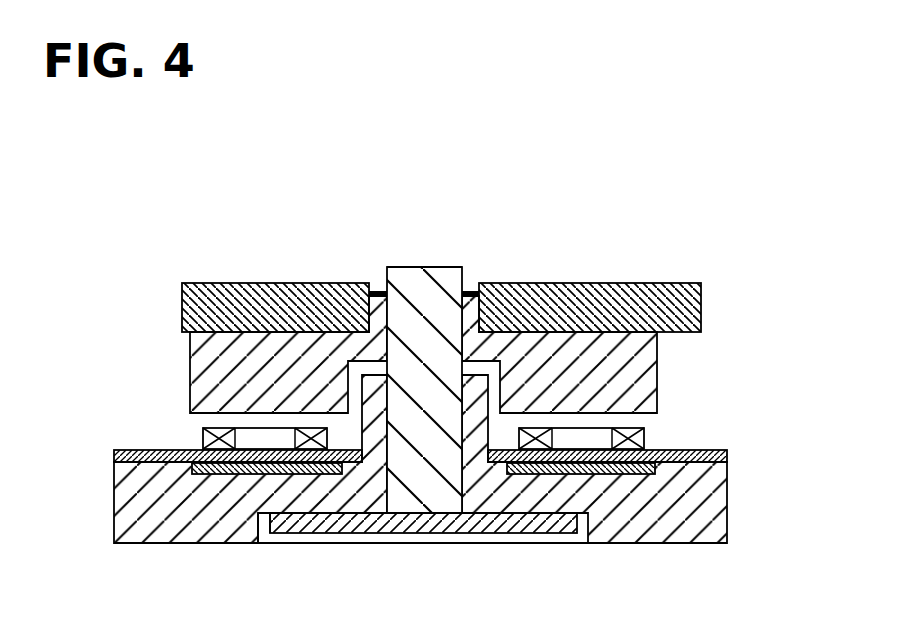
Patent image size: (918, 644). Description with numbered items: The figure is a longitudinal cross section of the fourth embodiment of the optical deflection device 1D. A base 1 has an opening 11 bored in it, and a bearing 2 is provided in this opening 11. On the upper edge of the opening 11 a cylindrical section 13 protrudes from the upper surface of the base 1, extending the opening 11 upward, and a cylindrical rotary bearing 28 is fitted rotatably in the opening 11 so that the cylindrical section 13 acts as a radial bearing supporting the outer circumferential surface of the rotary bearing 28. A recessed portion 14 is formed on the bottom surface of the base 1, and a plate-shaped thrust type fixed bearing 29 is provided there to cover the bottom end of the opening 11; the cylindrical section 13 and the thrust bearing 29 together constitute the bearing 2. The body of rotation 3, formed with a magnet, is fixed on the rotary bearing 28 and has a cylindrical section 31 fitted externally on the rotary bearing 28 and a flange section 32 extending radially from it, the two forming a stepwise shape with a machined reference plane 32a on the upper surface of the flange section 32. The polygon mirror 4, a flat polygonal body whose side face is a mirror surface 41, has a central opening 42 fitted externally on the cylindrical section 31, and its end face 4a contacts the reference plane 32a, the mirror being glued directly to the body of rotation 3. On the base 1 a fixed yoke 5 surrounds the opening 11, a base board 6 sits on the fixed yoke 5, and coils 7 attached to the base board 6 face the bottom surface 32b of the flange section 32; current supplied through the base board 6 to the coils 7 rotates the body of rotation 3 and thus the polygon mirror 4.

The optical deflection device 1D is at (572, 250).
The base 1 is at (727, 507).
The bearing 2 is at (435, 248).
The body of rotation 3 is at (676, 383).
The polygon mirror 4 is at (648, 284).
The end face 4a is at (617, 334).
The fixed yoke 5 is at (635, 475).
The base board 6 is at (727, 455).
The coils 7 is at (646, 441).
The opening 11 is at (460, 497).
The cylindrical section 13 is at (348, 446).
The recessed portion 14 is at (262, 530).
The rotary bearing 28 is at (405, 266).
The fixed bearing 29 is at (478, 533).
The cylindrical section 31 is at (370, 285).
The flange section 32 is at (190, 371).
The reference plane 32a is at (214, 328).
The bottom surface 32b is at (200, 417).
The mirror surface 41 is at (182, 295).
The opening 42 is at (470, 285).